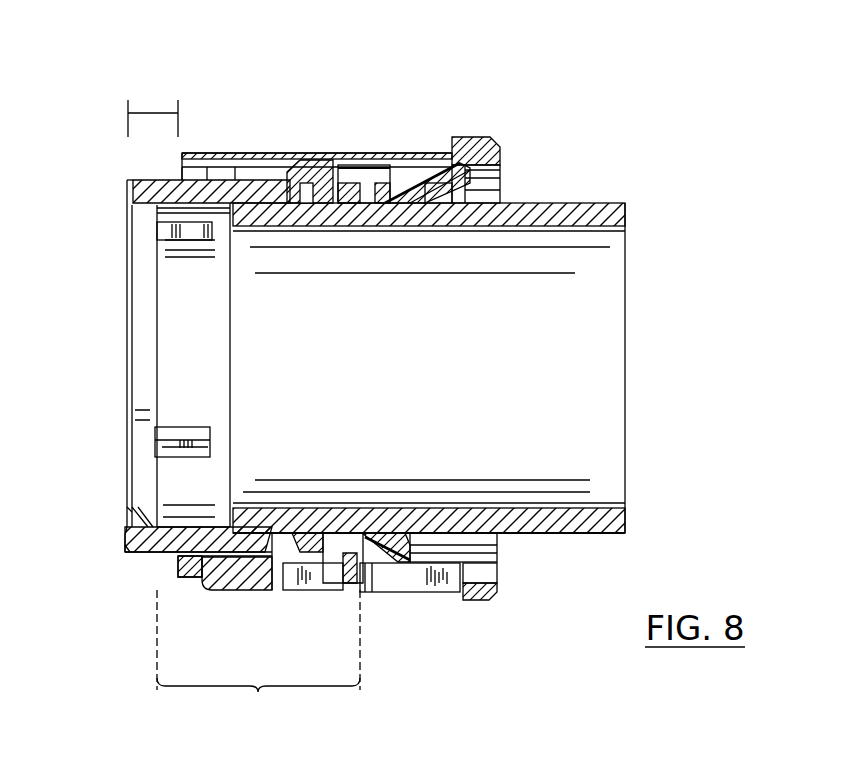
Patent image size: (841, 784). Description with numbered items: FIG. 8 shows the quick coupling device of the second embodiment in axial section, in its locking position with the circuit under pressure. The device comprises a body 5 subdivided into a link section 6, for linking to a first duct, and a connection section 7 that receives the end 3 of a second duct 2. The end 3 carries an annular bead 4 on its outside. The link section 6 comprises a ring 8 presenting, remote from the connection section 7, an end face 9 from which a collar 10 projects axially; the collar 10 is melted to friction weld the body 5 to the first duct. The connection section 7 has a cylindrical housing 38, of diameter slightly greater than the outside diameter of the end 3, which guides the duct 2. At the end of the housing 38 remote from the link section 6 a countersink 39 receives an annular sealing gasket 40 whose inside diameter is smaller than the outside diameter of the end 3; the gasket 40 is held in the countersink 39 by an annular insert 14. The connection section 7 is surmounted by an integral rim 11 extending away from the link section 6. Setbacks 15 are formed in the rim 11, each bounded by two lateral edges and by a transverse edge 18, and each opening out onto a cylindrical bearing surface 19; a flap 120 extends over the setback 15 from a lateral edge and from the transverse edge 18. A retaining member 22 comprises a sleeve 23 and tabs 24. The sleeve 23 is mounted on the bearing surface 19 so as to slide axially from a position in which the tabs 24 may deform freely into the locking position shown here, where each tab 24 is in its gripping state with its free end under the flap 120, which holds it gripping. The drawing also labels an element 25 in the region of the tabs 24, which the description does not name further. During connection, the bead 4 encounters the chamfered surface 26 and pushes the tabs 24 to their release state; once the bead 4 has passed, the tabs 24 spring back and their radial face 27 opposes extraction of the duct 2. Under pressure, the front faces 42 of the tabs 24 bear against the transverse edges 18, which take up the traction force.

The second duct 2 is at (606, 215).
The end of the duct 3 is at (218, 530).
The annular bead 4 is at (490, 553).
The body 5 is at (115, 565).
The link section 6 is at (153, 112).
The connection section 7 is at (258, 653).
The ring 8 is at (133, 513).
The end face 9 is at (123, 547).
The collar 10 is at (127, 528).
The rim 11 is at (512, 133).
The annular insert 14 is at (332, 190).
The setback 15 is at (303, 165).
The transverse edge 18 is at (436, 185).
The cylindrical bearing surface 19 is at (150, 180).
The retaining member 22 is at (262, 148).
The sleeve 23 is at (233, 587).
The tab 24 is at (375, 188).
The wedge surface 25 is at (418, 168).
The chamfered surface 26 is at (457, 200).
The radial face 27 is at (405, 195).
The cylindrical housing 38 is at (222, 232).
The countersink 39 is at (302, 555).
The sealing gasket 40 is at (354, 556).
The front faces 42 is at (472, 188).
The flap 120 is at (480, 140).